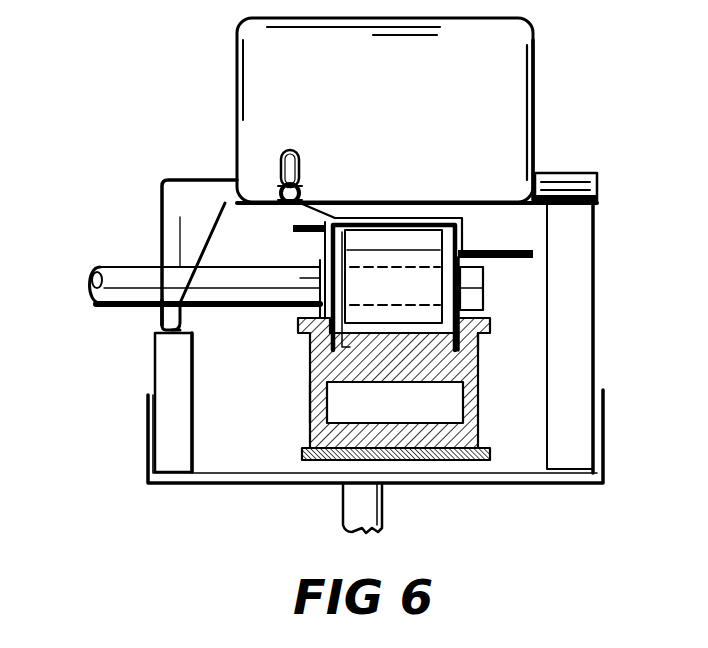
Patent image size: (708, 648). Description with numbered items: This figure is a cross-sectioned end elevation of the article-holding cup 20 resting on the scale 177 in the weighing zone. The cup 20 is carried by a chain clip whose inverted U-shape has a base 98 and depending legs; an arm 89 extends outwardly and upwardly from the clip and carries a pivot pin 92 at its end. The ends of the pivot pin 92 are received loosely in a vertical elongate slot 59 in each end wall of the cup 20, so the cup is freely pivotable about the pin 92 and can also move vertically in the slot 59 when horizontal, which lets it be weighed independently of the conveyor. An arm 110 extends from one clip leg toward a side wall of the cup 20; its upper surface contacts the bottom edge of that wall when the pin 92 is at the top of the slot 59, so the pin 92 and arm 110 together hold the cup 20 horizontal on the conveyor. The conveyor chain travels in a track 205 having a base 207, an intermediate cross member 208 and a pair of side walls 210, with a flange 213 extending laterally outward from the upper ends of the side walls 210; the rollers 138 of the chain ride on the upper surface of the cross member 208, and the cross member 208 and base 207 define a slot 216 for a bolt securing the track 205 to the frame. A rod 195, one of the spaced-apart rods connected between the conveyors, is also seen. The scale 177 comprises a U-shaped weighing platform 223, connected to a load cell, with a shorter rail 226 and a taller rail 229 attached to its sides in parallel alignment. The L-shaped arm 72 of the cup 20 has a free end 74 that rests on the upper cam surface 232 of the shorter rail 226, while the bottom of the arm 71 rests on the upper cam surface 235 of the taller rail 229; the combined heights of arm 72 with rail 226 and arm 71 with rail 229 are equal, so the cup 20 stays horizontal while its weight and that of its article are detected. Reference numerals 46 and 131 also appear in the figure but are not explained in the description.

The cup 20 is at (588, 78).
The vertical elongate slot 59 is at (292, 147).
The pivot pin 92 is at (302, 185).
The base 98 is at (437, 215).
The arm 110 is at (503, 250).
The arm 71 is at (592, 182).
The upper cam surface 235 is at (595, 205).
The L-shaped arm 72 is at (188, 205).
The arm 89 is at (298, 225).
The direction of movement 46 is at (314, 251).
The rod 195 is at (128, 268).
The plunger 131 is at (300, 278).
The rollers 138 is at (460, 298).
The flange 213 is at (487, 330).
The rail 229 is at (582, 290).
The free end 74 is at (156, 327).
The upper cam surface 232 is at (183, 323).
The rail 226 is at (186, 395).
The track 205 is at (312, 395).
The intermediate cross member 208 is at (462, 372).
The slot 216 is at (312, 415).
The base 207 is at (480, 428).
The weighing platform 223 is at (478, 483).
The scale 177 is at (634, 437).
The side walls 210 is at (480, 345).